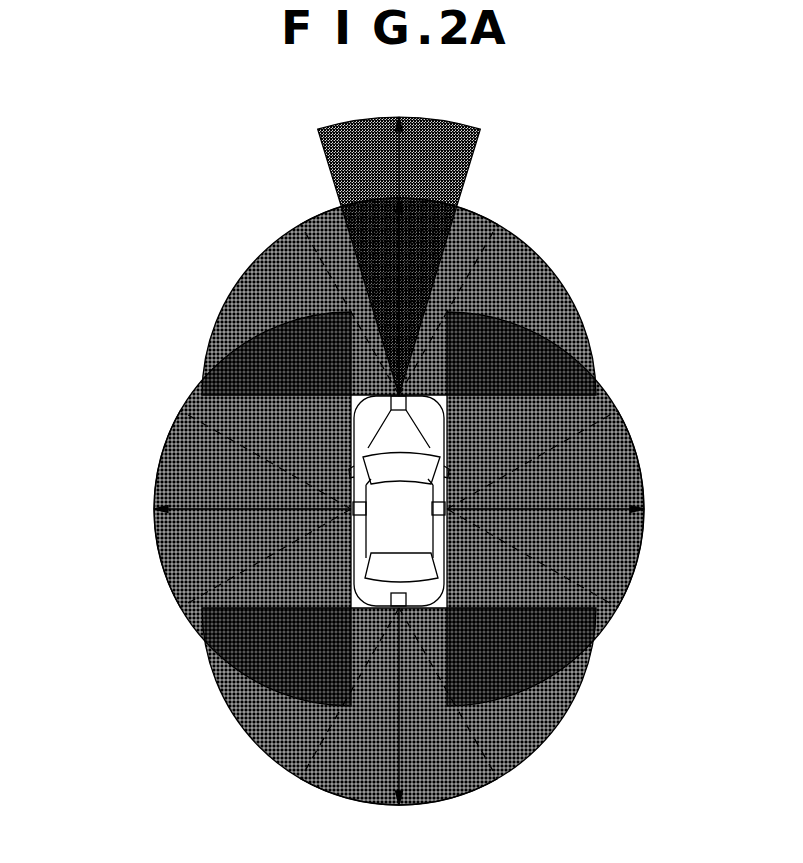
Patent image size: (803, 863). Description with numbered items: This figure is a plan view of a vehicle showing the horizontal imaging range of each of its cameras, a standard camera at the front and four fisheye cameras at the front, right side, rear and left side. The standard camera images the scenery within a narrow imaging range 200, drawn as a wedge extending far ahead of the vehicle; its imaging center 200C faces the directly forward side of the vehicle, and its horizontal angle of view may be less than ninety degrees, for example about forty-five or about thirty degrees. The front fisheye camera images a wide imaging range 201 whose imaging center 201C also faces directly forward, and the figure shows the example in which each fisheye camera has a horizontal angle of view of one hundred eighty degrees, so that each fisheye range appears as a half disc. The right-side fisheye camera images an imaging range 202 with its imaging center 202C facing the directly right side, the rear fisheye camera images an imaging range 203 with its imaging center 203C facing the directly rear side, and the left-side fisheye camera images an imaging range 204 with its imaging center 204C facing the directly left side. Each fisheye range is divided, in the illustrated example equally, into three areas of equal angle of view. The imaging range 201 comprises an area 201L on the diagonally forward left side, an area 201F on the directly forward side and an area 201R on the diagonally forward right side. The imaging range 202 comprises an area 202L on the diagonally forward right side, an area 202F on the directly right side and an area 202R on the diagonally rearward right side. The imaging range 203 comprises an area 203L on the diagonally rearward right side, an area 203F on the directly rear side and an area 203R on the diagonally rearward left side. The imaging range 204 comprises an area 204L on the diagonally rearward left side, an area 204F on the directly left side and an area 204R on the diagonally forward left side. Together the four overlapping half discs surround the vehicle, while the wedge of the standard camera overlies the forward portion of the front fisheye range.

The imaging range 200 is at (469, 136).
The imaging center 200C is at (396, 132).
The imaging range 201 is at (563, 288).
The imaging center 201C is at (384, 224).
The area 201L is at (268, 269).
The area 201R is at (517, 269).
The area 201F is at (457, 224).
The imaging range 202 is at (635, 532).
The imaging center 202C is at (612, 490).
The area 202L is at (543, 424).
The area 202R is at (557, 603).
The area 202F is at (606, 573).
The imaging range 203 is at (552, 715).
The imaging center 203C is at (395, 767).
The area 203L is at (515, 737).
The area 203R is at (268, 717).
The area 203F is at (343, 768).
The imaging range 204 is at (155, 562).
The imaging center 204C is at (177, 505).
The area 204L is at (270, 570).
The area 204R is at (205, 422).
The area 204F is at (182, 458).